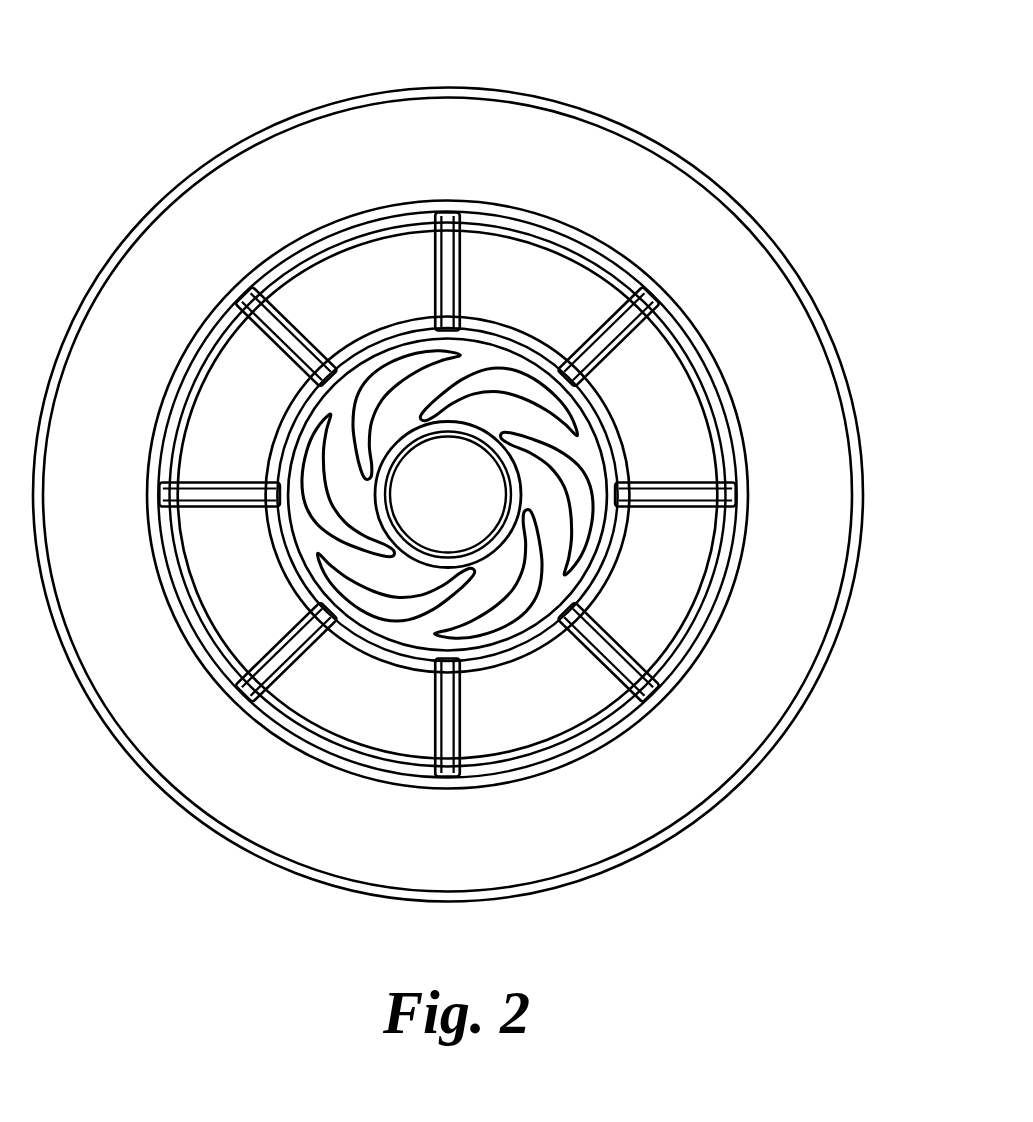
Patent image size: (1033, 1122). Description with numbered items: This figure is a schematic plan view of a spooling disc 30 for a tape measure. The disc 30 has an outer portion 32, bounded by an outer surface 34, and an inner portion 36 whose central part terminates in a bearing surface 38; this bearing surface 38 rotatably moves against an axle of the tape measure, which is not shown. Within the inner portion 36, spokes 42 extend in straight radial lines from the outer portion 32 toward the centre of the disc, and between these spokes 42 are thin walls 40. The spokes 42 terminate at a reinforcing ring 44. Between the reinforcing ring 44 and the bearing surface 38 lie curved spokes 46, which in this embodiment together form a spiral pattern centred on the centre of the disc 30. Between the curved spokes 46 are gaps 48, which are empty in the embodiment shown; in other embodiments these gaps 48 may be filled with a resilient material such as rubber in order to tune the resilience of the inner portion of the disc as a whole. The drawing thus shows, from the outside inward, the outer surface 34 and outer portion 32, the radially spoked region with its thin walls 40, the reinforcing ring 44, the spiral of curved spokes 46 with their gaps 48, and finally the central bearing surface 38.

The spooling disc 30 is at (602, 98).
The outer portion 32 is at (237, 213).
The outer surface 34 is at (328, 107).
The inner portion 36 is at (413, 247).
The bearing surface 38 is at (455, 445).
The thin walls 40 is at (570, 278).
The spokes 42 is at (650, 293).
The reinforcing ring 44 is at (287, 422).
The curved spokes 46 is at (341, 635).
The gaps 48 is at (365, 592).